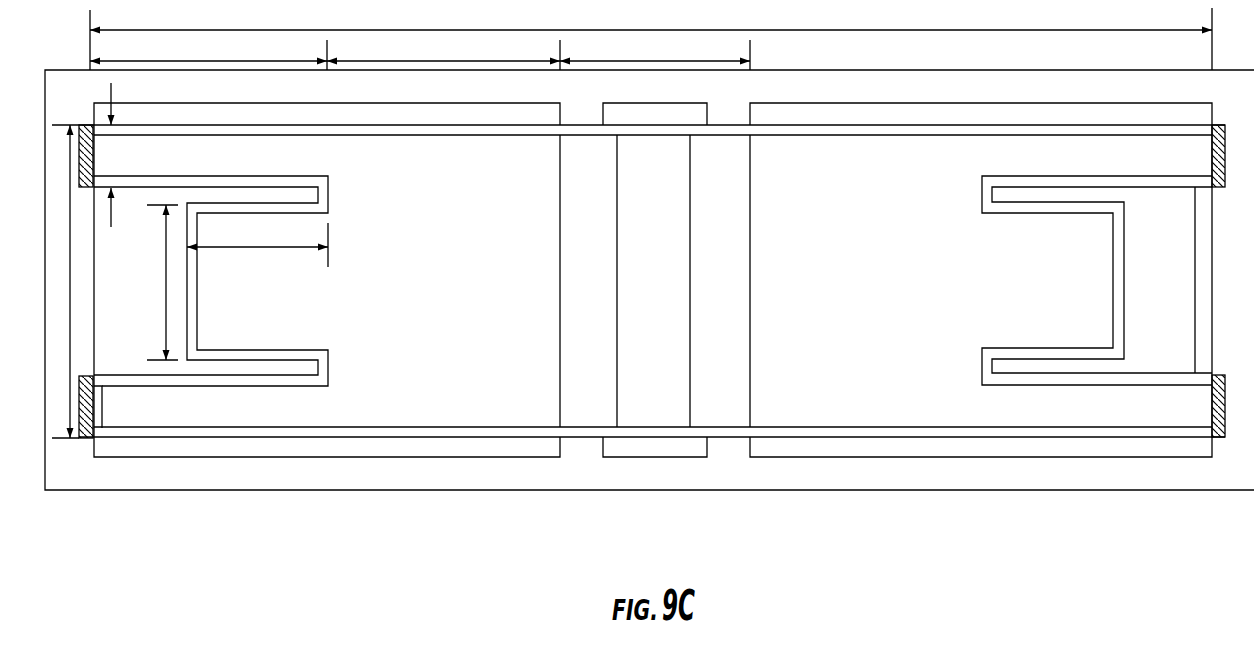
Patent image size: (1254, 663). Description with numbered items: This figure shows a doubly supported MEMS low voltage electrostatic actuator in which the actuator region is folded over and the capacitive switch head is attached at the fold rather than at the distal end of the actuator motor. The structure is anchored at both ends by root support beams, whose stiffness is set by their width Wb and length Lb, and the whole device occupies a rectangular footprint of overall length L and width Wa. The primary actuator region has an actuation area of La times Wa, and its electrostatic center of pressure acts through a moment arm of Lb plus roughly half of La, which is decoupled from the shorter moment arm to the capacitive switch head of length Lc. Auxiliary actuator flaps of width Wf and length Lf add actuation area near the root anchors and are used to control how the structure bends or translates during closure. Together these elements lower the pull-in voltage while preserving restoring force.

The length L is at (651, 36).
The root beam length Lb is at (208, 52).
The actuator length La is at (443, 52).
The capacitive switch head length Lc is at (655, 52).
The actuator width Wa is at (62, 281).
The root beam width Wb is at (113, 170).
The auxiliary flap width Wf is at (158, 282).
The auxiliary flap length Lf is at (257, 244).